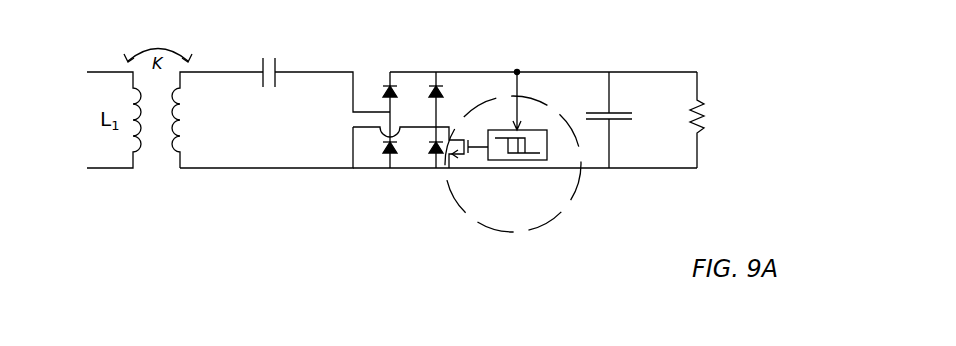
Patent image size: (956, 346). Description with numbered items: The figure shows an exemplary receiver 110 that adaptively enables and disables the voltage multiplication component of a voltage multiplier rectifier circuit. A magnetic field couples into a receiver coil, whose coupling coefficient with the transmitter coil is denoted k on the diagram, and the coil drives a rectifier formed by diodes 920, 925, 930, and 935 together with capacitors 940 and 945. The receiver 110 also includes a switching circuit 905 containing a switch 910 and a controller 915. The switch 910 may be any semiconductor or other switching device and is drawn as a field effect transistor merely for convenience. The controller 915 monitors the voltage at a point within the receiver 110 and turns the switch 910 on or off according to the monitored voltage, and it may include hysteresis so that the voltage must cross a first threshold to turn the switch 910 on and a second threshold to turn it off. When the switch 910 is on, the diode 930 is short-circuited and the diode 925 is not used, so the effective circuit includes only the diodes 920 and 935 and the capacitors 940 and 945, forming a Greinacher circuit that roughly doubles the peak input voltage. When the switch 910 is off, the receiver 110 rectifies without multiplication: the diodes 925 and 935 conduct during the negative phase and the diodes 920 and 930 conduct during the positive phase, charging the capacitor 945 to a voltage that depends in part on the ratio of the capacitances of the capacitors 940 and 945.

The receiver 110 is at (475, 166).
The switching circuit 905 is at (567, 203).
The switch 910 is at (448, 160).
The controller 915 is at (527, 160).
The diode 920 is at (381, 78).
The diode 925 is at (425, 80).
The diode 930 is at (427, 163).
The diode 935 is at (382, 162).
The capacitor 940 is at (272, 92).
The capacitor 945 is at (639, 145).